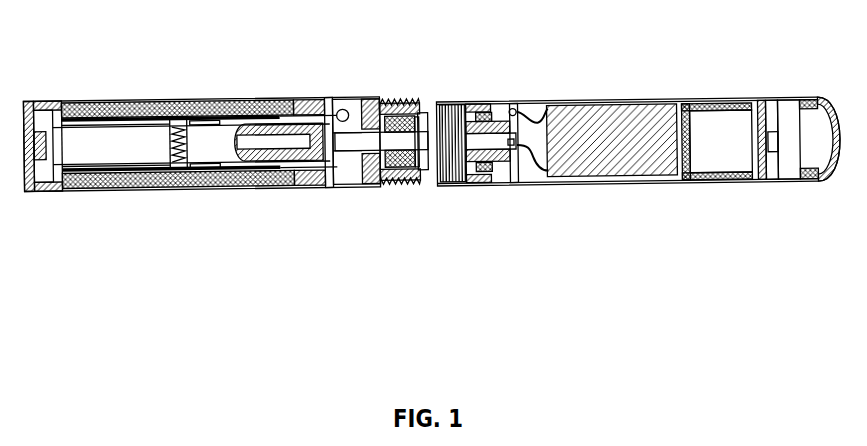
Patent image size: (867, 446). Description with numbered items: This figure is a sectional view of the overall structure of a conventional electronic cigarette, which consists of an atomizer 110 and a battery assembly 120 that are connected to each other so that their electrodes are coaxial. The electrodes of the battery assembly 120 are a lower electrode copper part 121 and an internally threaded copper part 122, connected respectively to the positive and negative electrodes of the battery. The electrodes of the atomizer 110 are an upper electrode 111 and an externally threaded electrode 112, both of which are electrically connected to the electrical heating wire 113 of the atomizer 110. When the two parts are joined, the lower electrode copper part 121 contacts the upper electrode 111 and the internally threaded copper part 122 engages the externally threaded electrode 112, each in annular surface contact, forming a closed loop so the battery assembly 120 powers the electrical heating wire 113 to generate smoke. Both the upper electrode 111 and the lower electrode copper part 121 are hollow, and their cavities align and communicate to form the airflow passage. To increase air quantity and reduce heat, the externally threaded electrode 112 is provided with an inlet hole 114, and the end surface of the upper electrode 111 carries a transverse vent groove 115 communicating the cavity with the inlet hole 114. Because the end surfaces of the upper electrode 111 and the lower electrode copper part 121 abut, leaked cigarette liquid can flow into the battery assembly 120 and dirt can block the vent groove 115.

The atomizer 110 is at (92, 142).
The upper electrode 111 is at (398, 165).
The externally threaded electrode 112 is at (368, 191).
The electrical heating wire 113 is at (190, 108).
The inlet hole 114 is at (387, 106).
The vent groove 115 is at (422, 147).
The battery assembly 120 is at (612, 128).
The lower electrode copper part 121 is at (517, 165).
The internally threaded copper part 122 is at (490, 112).